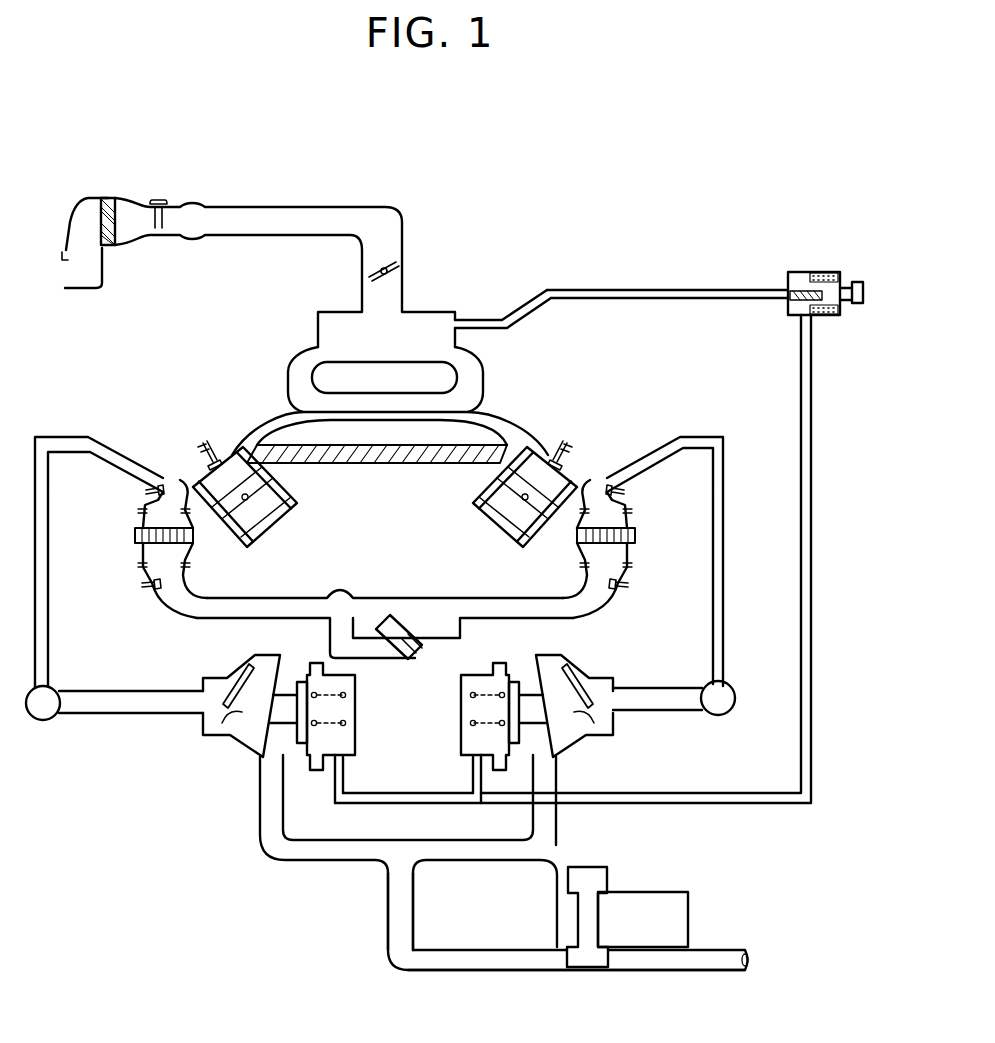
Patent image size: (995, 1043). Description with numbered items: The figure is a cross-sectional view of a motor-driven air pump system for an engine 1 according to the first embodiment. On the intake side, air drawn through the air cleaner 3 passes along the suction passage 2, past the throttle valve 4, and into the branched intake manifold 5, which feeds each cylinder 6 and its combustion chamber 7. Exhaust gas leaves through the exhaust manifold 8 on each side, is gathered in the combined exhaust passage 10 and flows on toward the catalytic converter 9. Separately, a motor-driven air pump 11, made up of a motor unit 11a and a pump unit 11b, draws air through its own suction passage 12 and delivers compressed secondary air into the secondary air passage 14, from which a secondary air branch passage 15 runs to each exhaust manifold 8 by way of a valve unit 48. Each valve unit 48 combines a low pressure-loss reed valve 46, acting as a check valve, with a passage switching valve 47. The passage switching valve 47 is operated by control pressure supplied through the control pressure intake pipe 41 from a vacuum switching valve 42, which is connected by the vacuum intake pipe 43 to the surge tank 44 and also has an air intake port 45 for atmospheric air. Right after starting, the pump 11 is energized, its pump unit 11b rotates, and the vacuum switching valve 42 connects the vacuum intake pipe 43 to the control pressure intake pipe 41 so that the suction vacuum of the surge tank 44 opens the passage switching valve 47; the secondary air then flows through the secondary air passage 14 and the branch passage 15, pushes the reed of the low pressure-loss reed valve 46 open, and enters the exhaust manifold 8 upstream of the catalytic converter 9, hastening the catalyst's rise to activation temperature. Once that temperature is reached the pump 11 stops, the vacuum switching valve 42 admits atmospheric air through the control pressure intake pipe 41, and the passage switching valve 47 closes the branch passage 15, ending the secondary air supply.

The engine 1 is at (228, 420).
The suction passage 2 is at (382, 206).
The air cleaner 3 is at (108, 198).
The throttle valve 4 is at (372, 275).
The branched intake manifold 5 is at (290, 362).
The cylinder 6 is at (297, 492).
The combustion chamber 7 is at (203, 463).
The exhaust manifold 8 is at (150, 495).
The catalytic converter 9 is at (137, 537).
The combined exhaust passage 10 is at (335, 640).
The motor-driven air pump 11 is at (663, 889).
The motor unit 11a is at (686, 914).
The pump unit 11b is at (592, 875).
The suction passage 12 is at (708, 970).
The secondary air passage 14 is at (388, 912).
The secondary air branch passage 15 is at (105, 715).
The control pressure intake pipe 41 is at (748, 792).
The vacuum switching valve (VSV) 42 is at (788, 280).
The vacuum intake pipe 43 is at (630, 289).
The surge tank 44 is at (450, 318).
The air intake port 45 is at (856, 281).
The low pressure-loss reed valve 46 is at (228, 700).
The passage switching valve 47 is at (461, 705).
The valve unit 48 is at (225, 655).